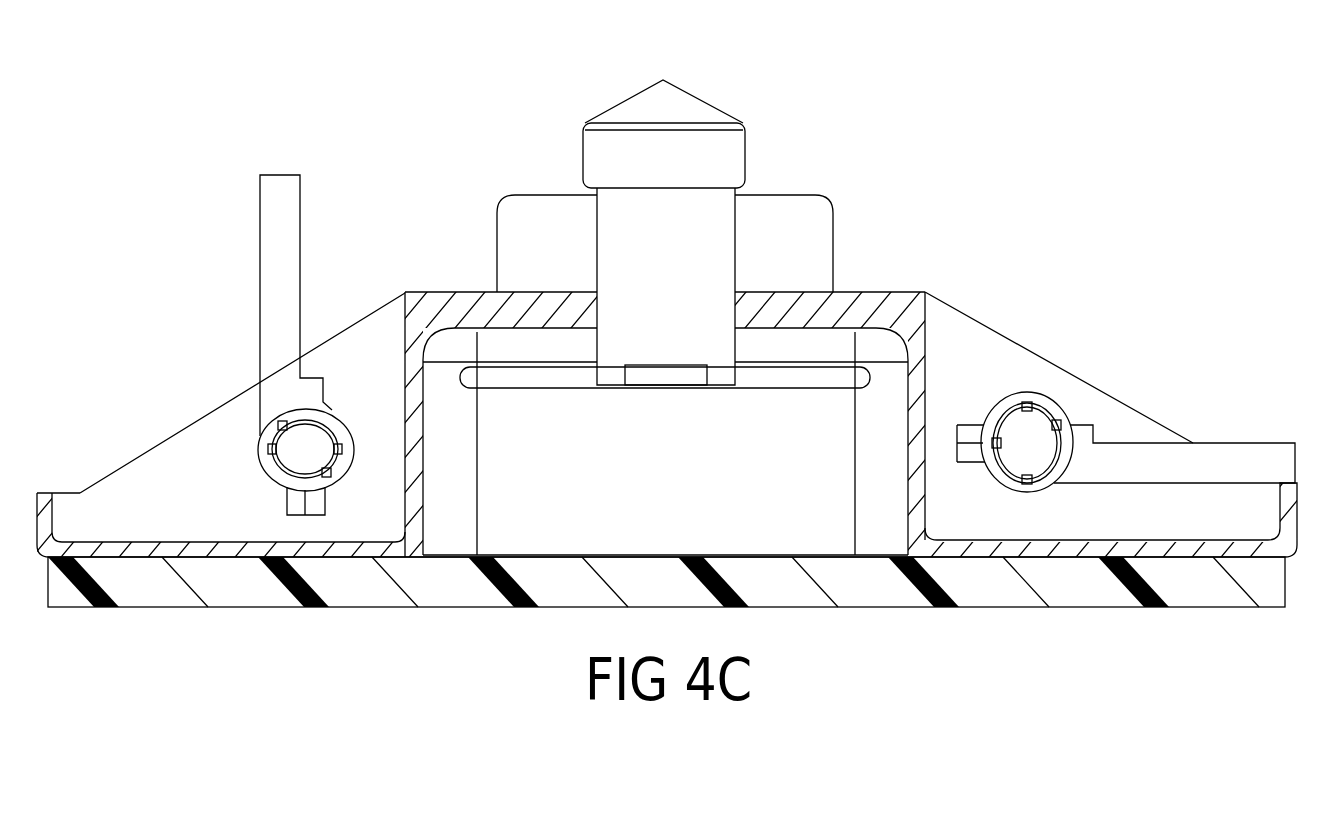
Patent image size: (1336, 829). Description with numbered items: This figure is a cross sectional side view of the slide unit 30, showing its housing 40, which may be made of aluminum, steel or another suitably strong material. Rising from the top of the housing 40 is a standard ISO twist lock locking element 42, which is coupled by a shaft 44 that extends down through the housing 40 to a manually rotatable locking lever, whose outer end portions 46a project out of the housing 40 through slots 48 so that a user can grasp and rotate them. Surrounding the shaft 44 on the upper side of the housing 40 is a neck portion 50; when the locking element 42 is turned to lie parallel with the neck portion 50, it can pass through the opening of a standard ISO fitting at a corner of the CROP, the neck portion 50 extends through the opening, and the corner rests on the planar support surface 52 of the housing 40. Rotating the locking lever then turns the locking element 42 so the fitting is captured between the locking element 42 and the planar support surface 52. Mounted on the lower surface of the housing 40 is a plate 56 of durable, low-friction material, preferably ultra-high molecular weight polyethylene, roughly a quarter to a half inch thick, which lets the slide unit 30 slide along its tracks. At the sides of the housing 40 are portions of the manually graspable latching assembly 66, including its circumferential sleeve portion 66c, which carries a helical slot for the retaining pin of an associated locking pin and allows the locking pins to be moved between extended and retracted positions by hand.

The slide unit 30 is at (1020, 206).
The housing 40 is at (975, 368).
The locking element 42 is at (688, 105).
The shaft 44 is at (703, 217).
The outer end portions 46a is at (667, 373).
The slots 48 is at (520, 378).
The neck portion 50 is at (543, 207).
The planar support surface 52 is at (443, 292).
The plate 56 is at (1090, 585).
The latching assembly 66 is at (228, 415).
The sleeve portion 66c is at (275, 293).